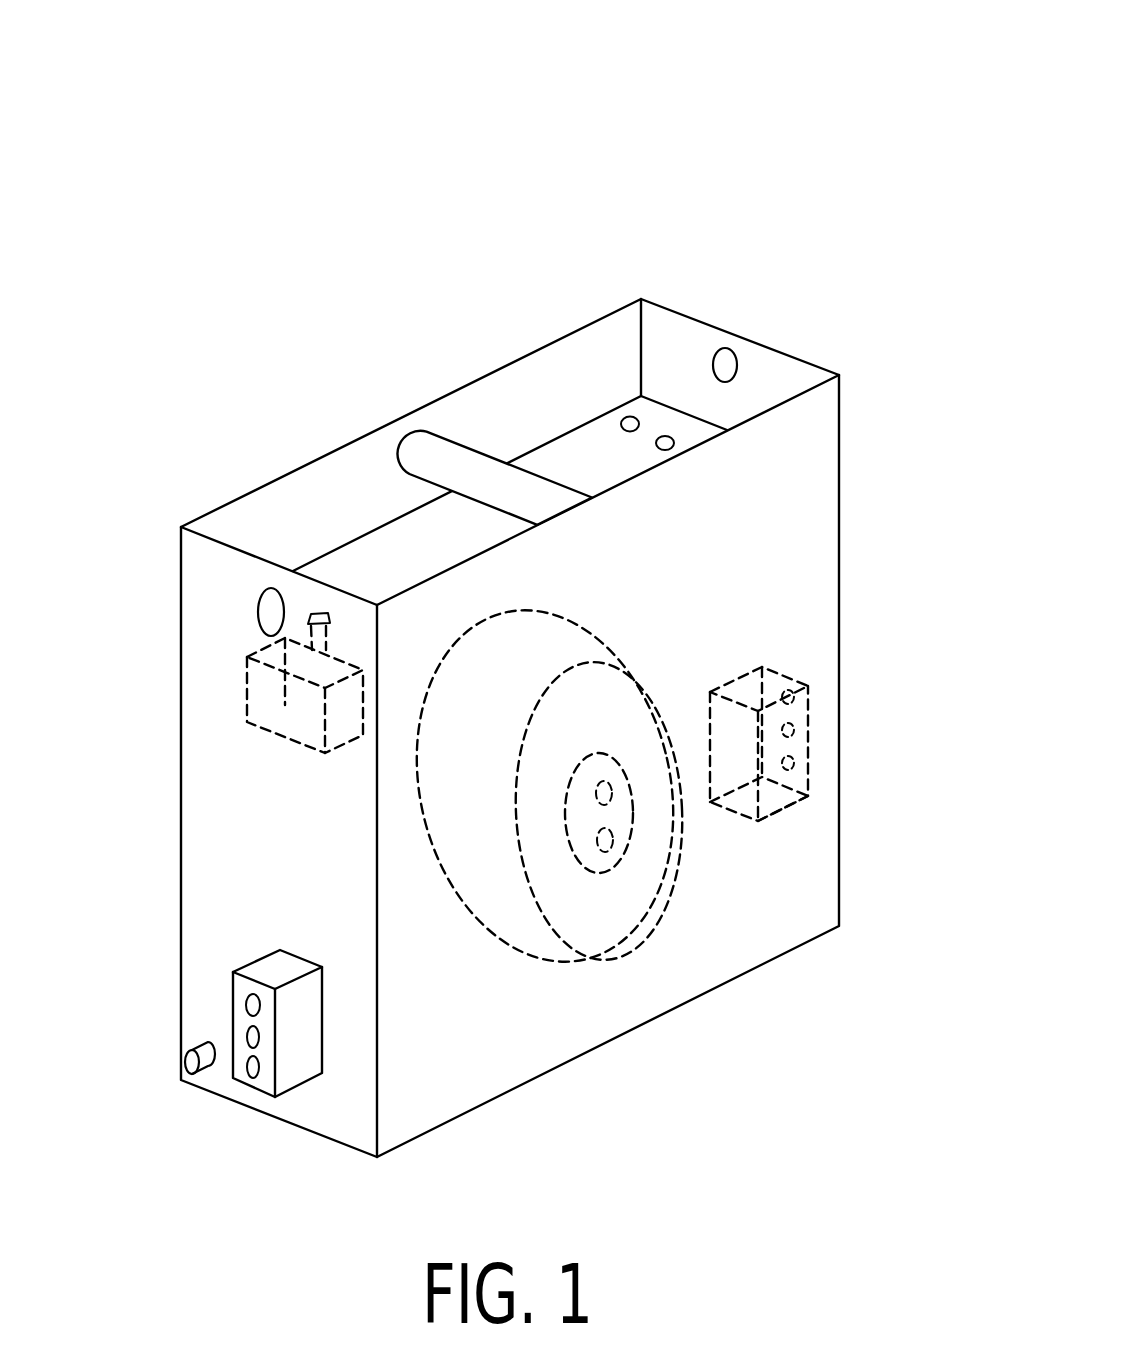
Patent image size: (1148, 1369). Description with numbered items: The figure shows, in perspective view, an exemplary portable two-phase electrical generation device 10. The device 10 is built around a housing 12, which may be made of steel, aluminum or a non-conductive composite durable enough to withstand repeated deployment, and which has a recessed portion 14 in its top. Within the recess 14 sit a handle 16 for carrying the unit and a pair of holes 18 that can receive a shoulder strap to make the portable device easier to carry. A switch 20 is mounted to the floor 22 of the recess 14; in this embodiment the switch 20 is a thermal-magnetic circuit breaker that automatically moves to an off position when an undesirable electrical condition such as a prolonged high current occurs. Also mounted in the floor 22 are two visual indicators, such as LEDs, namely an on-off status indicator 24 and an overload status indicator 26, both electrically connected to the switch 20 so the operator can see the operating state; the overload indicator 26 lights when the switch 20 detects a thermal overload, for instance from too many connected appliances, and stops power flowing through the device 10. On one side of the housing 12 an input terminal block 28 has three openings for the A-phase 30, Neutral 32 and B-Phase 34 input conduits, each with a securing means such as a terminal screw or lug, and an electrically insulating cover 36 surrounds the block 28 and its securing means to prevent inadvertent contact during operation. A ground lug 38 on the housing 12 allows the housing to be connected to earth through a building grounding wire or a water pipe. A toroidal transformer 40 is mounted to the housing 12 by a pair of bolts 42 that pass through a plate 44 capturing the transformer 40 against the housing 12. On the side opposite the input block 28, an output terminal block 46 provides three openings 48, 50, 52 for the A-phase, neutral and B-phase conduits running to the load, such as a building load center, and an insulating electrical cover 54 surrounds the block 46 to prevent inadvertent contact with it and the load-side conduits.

The portable two-phase electrical generation device 10 is at (226, 114).
The housing 12 is at (805, 356).
The recessed portion 14 is at (313, 489).
The handle 16 is at (422, 453).
The holes 18 is at (726, 349).
The switch 20 is at (247, 699).
The floor 22 is at (402, 548).
The on-off status indicator 24 is at (627, 415).
The overload status indicator 26 is at (663, 434).
The input terminal block 28 is at (298, 1090).
The A-phase opening 30 is at (246, 1002).
The Neutral opening 32 is at (250, 1043).
The B-phase opening 34 is at (254, 1077).
The electrically insulating cover 36 is at (257, 960).
The ground lug 38 is at (186, 1052).
The toroidal transformer 40 is at (620, 800).
The bolts 42 is at (620, 850).
The plate 44 is at (580, 850).
The output terminal block 46 is at (762, 667).
The A-phase output opening 48 is at (808, 687).
The neutral output opening 50 is at (807, 723).
The B-phase output opening 52 is at (807, 760).
The insulating electrical cover 54 is at (790, 805).